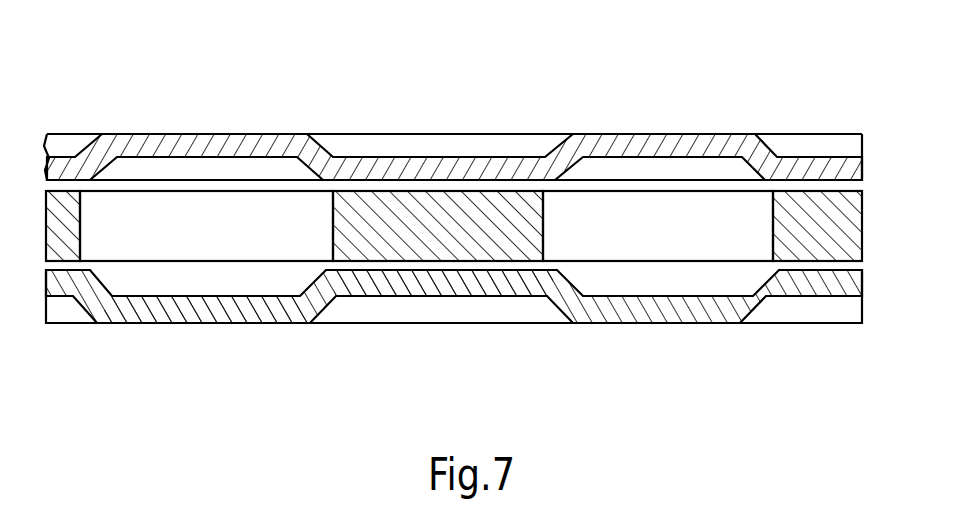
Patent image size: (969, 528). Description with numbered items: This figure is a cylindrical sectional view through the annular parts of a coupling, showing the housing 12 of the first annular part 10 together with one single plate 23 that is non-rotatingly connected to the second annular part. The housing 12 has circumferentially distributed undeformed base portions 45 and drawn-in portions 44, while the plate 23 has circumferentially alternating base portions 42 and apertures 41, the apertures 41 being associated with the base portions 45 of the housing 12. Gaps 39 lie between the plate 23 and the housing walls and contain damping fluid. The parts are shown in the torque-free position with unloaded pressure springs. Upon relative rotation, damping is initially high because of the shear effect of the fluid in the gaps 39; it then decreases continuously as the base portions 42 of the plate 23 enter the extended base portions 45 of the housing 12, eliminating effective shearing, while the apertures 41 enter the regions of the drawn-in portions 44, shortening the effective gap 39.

The first annular part 10 is at (437, 105).
The housing 12 is at (156, 338).
The plate 23 is at (406, 281).
The gaps 39 is at (527, 268).
The apertures 41 is at (665, 242).
The base portions of the plate 42 is at (815, 243).
The drawn-in portions 44 is at (480, 288).
The undeformed base portions 45 is at (249, 307).